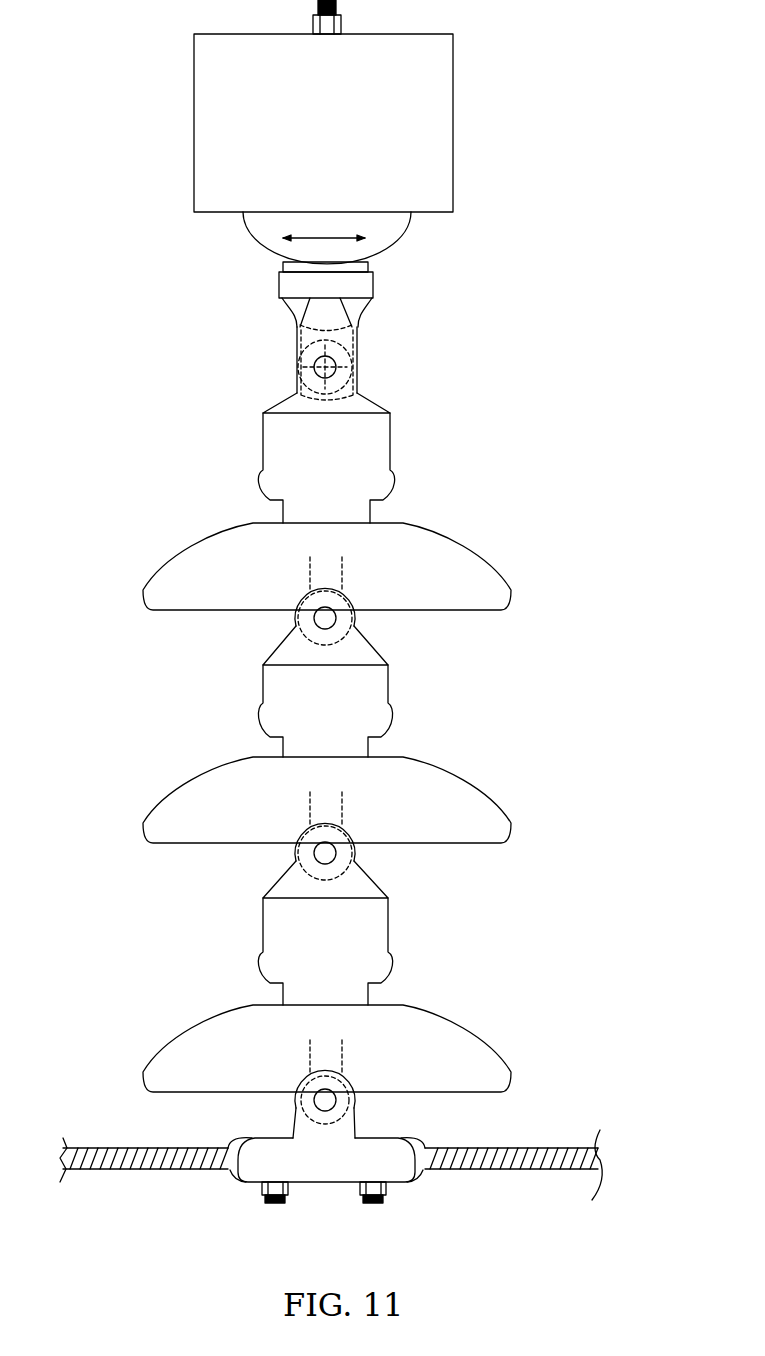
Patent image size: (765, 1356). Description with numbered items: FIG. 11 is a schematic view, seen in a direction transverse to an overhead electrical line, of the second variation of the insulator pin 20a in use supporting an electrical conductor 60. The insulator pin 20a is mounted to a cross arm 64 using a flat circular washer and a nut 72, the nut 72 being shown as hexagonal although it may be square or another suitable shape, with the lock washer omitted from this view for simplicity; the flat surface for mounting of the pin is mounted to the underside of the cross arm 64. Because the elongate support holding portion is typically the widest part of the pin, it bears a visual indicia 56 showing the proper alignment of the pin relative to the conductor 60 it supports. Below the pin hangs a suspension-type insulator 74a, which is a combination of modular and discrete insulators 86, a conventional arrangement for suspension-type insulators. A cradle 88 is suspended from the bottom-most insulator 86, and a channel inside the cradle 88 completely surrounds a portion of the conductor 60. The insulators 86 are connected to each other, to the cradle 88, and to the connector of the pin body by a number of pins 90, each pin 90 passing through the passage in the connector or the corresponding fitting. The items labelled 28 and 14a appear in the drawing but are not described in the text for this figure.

The threaded stud 28 is at (315, 8).
The nut 72 is at (340, 18).
The cross arm 64 is at (442, 146).
The visual indicia 56 is at (370, 230).
The insulator pin 20a is at (412, 305).
The insulator string 14a is at (572, 618).
The insulator 86 is at (455, 560).
The pin 90 is at (300, 364).
The insulator 74a is at (420, 1140).
The conductor 60 is at (600, 1145).
The cradle 88 is at (400, 1180).